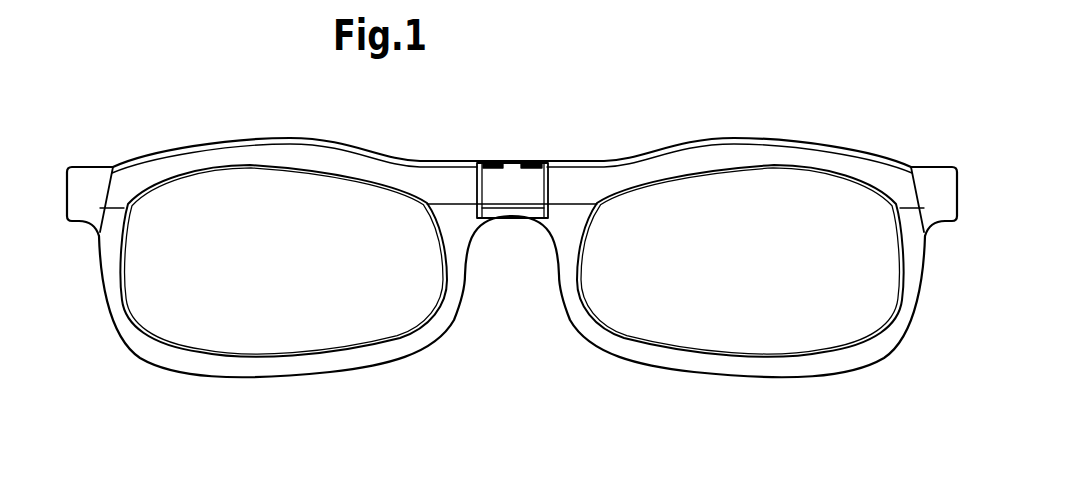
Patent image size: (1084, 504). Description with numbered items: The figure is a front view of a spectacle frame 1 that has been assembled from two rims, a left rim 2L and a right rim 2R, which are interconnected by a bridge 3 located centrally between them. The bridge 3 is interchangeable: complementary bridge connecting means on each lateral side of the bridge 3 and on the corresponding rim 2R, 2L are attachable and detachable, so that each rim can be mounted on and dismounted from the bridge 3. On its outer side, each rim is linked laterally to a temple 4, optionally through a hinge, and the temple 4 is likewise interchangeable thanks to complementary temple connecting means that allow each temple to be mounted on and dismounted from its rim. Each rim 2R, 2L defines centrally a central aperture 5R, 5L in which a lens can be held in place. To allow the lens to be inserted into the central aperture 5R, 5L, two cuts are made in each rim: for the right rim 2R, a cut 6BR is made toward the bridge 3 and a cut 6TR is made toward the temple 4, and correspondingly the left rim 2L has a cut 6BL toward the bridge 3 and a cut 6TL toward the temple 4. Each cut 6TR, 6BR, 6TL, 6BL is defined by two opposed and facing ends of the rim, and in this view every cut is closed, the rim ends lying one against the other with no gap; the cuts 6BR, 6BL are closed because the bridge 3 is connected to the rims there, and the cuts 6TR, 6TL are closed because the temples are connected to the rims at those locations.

The spectacle frame 1 is at (737, 93).
The right rim 2R is at (183, 162).
The left rim 2L is at (650, 168).
The bridge 3 is at (515, 182).
The temple 4 is at (88, 188).
The central aperture of right rim 5R is at (284, 218).
The central aperture of left rim 5L is at (850, 280).
The cut toward the temple in right rim 6TR is at (147, 211).
The cut toward the bridge in right rim 6BR is at (414, 212).
The cut toward the bridge in left rim 6BL is at (610, 212).
The cut toward the temple in left rim 6TL is at (870, 205).